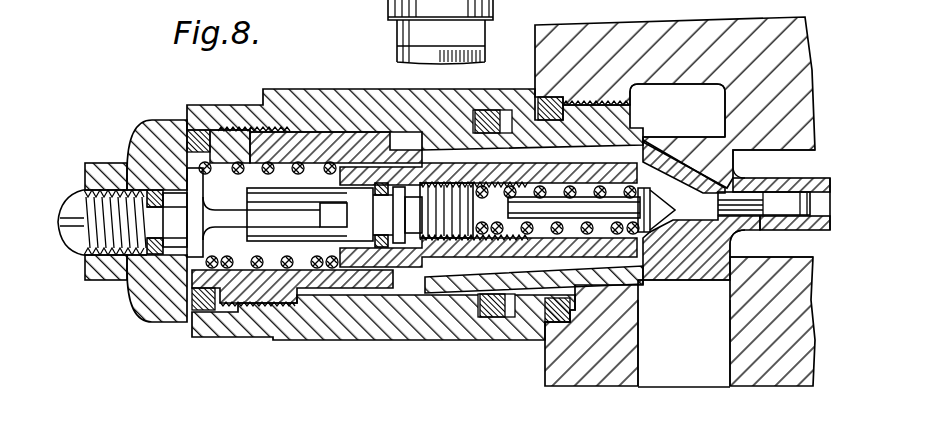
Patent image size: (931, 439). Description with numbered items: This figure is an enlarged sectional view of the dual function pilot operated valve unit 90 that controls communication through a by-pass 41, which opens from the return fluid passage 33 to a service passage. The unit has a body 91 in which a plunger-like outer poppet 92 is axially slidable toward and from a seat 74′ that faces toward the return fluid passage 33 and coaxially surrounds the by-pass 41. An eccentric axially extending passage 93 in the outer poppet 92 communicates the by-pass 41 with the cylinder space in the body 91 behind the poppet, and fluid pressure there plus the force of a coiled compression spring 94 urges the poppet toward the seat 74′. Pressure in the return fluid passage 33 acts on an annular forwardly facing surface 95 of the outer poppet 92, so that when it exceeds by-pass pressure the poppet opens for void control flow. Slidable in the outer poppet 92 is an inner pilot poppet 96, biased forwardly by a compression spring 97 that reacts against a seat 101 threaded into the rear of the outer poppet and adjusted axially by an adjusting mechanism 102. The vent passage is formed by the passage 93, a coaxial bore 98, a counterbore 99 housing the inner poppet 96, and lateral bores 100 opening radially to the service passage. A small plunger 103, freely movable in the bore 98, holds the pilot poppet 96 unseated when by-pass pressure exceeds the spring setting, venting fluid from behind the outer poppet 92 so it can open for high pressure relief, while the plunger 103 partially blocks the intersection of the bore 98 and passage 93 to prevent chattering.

The return fluid passage 33 is at (673, 348).
The by-pass 41 is at (816, 149).
The seat 74′ is at (717, 133).
The dual function pilot operated valve unit 90 is at (342, 78).
The body 91 is at (390, 88).
The outer poppet 92 is at (642, 114).
The eccentric axially extending passage 93 is at (473, 263).
The coiled compression spring 94 is at (243, 293).
The annular forwardly facing surface 95 is at (692, 284).
The inner pilot poppet 96 is at (645, 281).
The compression spring 97 is at (577, 251).
The coaxial bore 98 is at (712, 225).
The counterbore 99 is at (547, 187).
The lateral bores 100 is at (765, 160).
The seat 101 is at (483, 243).
The adjusting mechanism 102 is at (253, 180).
The small plunger 103 is at (817, 228).